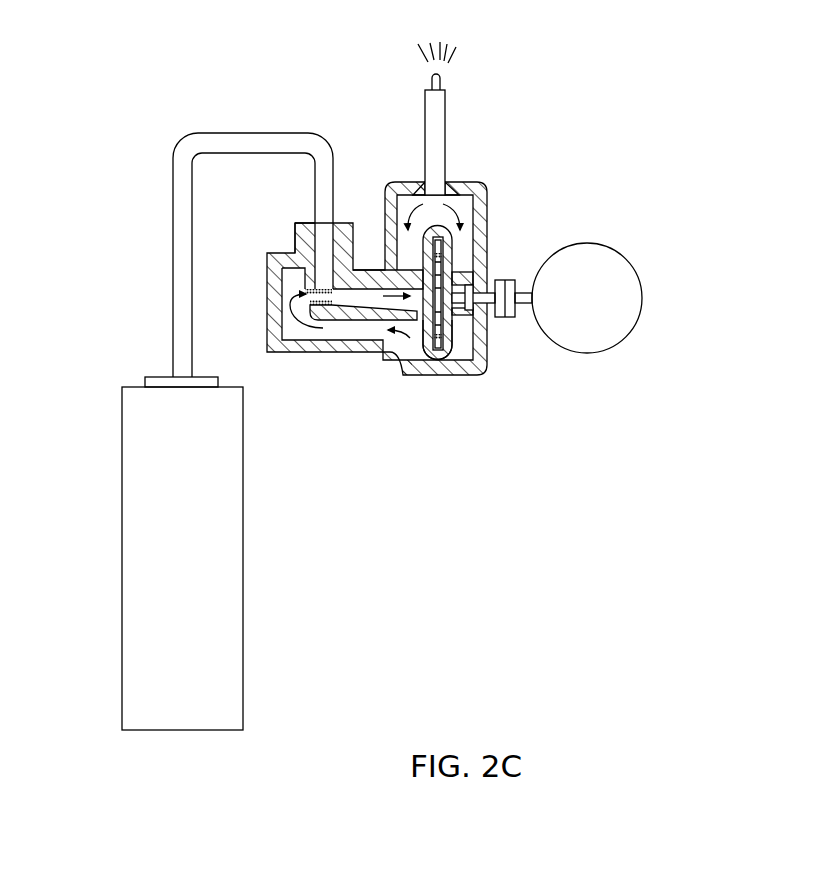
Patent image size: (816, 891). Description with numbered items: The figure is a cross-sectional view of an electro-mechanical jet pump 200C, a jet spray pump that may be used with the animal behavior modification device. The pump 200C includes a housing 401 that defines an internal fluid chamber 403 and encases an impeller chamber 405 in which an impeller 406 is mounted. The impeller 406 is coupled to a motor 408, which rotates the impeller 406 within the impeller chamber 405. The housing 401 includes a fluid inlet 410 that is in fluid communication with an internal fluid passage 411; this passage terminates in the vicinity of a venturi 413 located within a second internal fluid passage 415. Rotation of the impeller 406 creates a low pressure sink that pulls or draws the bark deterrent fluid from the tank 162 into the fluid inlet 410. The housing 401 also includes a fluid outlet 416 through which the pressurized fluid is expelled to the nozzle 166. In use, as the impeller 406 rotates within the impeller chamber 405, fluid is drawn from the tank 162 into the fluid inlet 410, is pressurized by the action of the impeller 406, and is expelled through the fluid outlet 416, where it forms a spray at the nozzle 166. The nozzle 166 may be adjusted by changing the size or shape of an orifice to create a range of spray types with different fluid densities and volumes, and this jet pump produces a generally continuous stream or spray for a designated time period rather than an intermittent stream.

The electro-mechanical jet pump 200C is at (600, 92).
The tank 162 is at (122, 491).
The nozzle 166 is at (446, 83).
The housing 401 is at (486, 188).
The internal fluid chamber 403 is at (412, 210).
The impeller chamber 405 is at (450, 246).
The impeller 406 is at (423, 308).
The motor 408 is at (642, 296).
The fluid inlet 410 is at (338, 235).
The internal fluid passage 411 is at (296, 243).
The venturi 413 is at (305, 294).
The second internal fluid passage 415 is at (358, 297).
The fluid outlet 416 is at (455, 182).